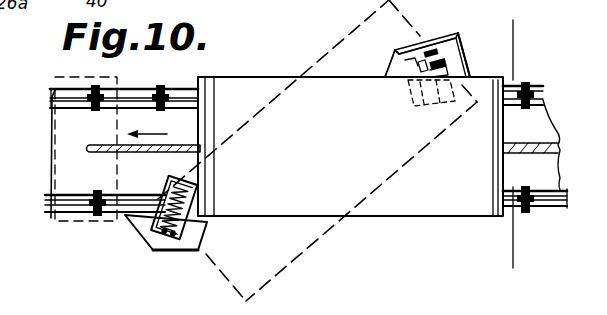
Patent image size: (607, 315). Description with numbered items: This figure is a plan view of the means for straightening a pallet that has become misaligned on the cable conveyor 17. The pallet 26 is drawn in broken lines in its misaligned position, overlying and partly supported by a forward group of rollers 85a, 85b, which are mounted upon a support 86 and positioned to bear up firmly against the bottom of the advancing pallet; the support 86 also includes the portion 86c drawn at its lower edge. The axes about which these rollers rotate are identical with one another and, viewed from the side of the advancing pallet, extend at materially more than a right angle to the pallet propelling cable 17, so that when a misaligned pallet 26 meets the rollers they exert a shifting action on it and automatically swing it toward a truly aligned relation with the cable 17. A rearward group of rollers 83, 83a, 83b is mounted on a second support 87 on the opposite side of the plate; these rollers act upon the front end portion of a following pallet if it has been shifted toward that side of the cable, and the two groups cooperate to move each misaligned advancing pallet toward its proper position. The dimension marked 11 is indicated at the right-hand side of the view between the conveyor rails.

The frame 11 is at (567, 40).
The cable conveyor 17 is at (543, 122).
The pallet 26 is at (328, 56).
The roller 83 is at (489, 38).
The roller 83a is at (460, 70).
The roller 83b is at (408, 102).
The roller 85a is at (199, 207).
The roller 85b is at (206, 222).
The support 86 is at (138, 233).
The base flange 86c is at (192, 236).
The support 87 is at (455, 34).